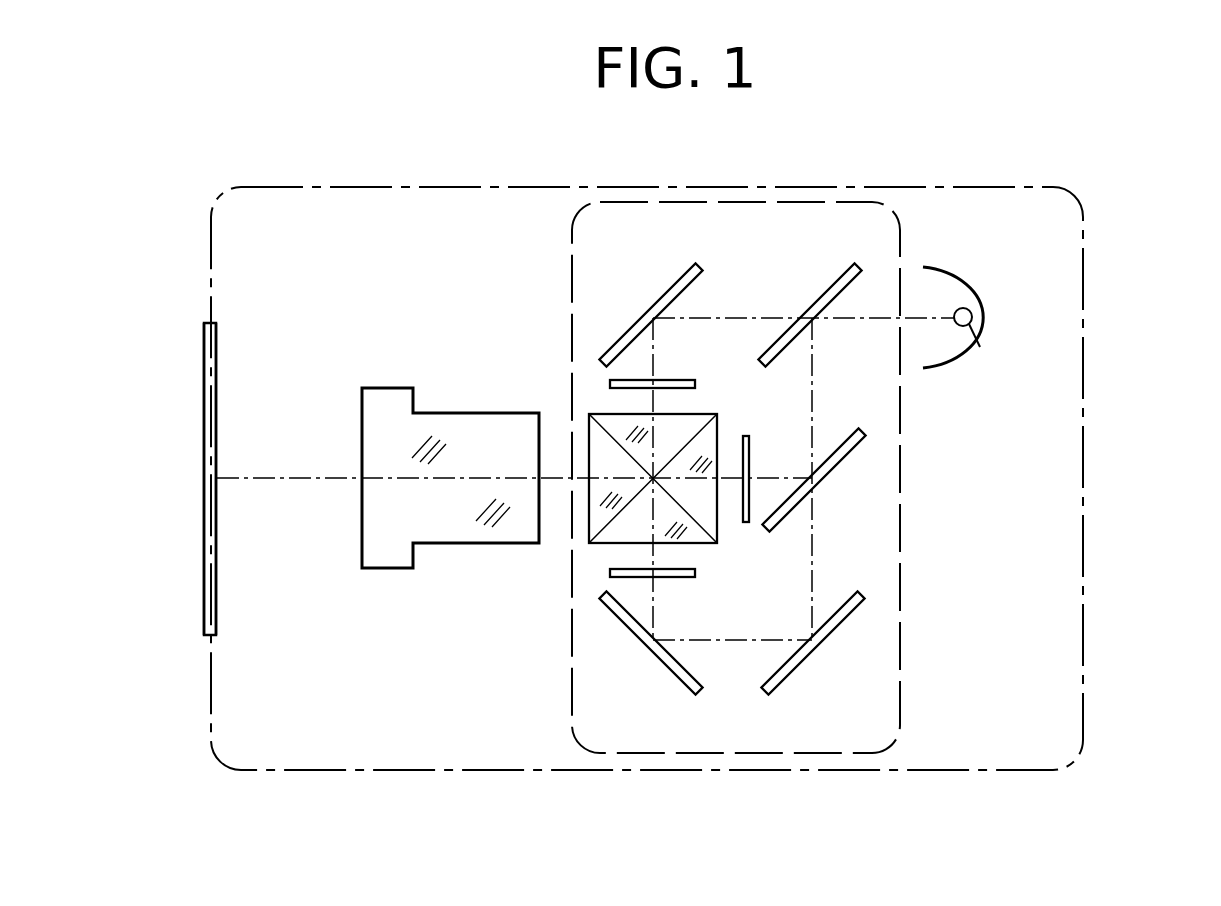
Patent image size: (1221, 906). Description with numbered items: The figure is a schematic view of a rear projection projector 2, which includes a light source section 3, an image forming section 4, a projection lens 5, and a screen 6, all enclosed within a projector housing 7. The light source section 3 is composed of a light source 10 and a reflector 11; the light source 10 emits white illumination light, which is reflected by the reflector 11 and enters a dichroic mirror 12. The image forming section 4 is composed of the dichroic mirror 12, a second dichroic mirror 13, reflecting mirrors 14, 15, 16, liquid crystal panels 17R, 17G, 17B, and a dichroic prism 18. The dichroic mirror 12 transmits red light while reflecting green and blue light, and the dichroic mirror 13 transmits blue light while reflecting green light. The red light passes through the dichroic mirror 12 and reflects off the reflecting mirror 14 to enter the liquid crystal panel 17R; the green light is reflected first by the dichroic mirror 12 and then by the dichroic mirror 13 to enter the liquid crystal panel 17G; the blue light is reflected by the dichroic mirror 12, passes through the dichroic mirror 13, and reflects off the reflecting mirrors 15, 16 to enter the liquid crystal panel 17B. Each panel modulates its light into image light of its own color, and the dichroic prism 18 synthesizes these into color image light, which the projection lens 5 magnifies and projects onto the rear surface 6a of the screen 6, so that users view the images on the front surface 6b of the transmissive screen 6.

The projector 2 is at (1135, 268).
The light source section 3 is at (981, 367).
The image forming section 4 is at (899, 677).
The projection lens 5 is at (445, 545).
The screen 6 is at (217, 620).
The rear surface 6a is at (217, 558).
The front surface 6b is at (204, 562).
The projector housing 7 is at (1083, 493).
The light source 10 is at (958, 362).
The reflector 11 is at (984, 350).
The dichroic mirror 12 is at (838, 276).
The dichroic mirror 13 is at (835, 468).
The reflecting mirror 14 is at (671, 286).
The reflecting mirror 15 is at (785, 680).
The reflecting mirror 16 is at (670, 680).
The liquid crystal panel 17R is at (665, 379).
The liquid crystal panel 17G is at (746, 436).
The liquid crystal panel 17B is at (680, 578).
The dichroic prism 18 is at (717, 537).